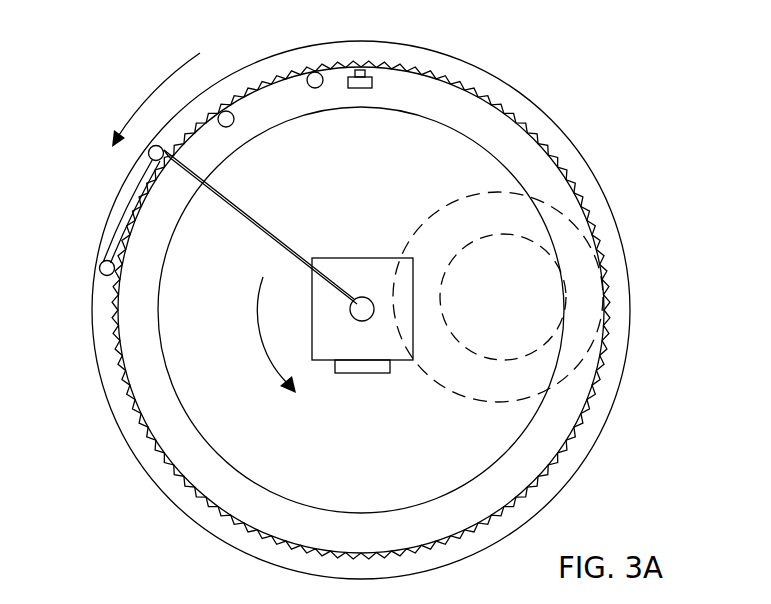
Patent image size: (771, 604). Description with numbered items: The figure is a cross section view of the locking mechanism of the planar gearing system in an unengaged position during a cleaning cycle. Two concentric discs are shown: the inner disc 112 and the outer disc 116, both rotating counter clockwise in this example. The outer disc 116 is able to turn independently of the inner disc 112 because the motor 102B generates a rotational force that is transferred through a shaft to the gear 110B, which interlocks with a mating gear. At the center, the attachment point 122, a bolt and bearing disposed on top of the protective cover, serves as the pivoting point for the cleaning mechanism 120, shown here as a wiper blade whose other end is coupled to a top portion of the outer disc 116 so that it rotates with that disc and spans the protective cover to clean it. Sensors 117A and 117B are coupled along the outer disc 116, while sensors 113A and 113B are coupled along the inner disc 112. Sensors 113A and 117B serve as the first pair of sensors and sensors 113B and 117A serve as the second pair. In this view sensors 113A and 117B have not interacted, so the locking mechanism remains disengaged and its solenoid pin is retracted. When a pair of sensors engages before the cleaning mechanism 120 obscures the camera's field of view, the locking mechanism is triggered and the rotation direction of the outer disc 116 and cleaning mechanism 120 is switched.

The outer disc 116 is at (507, 80).
The inner disc 112 is at (523, 127).
The gear 110B is at (612, 288).
The motor 102B is at (512, 233).
The sensor 113A is at (228, 127).
The sensor 113B is at (317, 88).
The sensor 117A is at (100, 264).
The sensor 117B is at (148, 153).
The cleaning mechanism 120 is at (266, 232).
The attachment point 122 is at (365, 297).